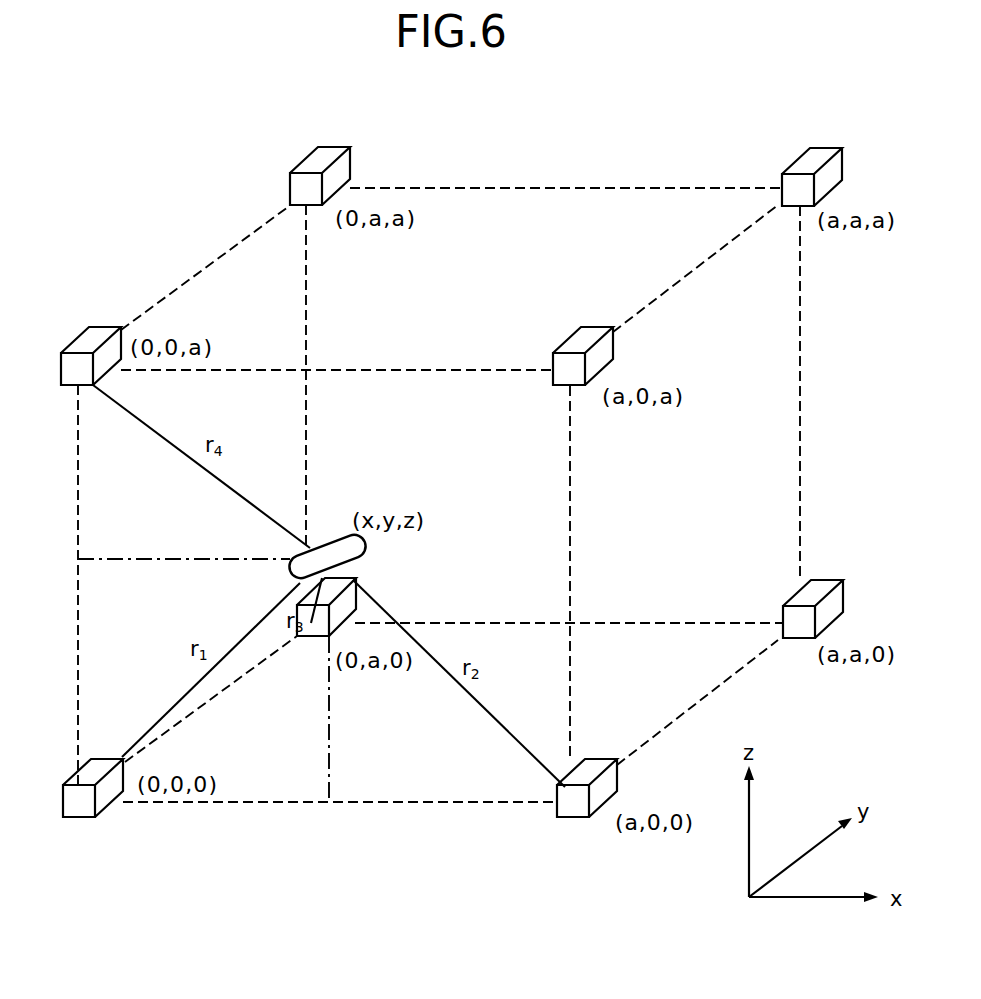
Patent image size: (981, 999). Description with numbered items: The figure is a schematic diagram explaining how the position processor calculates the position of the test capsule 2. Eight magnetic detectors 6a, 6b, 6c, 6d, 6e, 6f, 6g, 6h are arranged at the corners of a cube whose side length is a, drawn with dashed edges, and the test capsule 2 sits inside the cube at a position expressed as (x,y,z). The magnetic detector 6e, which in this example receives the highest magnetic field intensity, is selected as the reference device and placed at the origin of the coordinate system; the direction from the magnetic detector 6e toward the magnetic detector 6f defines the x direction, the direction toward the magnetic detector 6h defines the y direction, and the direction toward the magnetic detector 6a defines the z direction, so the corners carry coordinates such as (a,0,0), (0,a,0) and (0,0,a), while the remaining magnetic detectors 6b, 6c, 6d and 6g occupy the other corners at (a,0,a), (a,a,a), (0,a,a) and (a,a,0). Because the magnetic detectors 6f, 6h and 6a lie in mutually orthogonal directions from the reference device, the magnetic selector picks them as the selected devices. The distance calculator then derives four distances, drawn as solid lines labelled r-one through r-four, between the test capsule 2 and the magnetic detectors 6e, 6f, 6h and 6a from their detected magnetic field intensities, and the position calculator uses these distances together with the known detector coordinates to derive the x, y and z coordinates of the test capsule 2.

The test capsule 2 is at (337, 547).
The magnetic detector 6a is at (89, 331).
The magnetic detector 6b is at (584, 331).
The magnetic detector 6c is at (814, 153).
The magnetic detector 6d is at (322, 152).
The magnetic detector 6e is at (94, 766).
The magnetic detector 6f is at (592, 765).
The magnetic detector 6g is at (816, 588).
The magnetic detector 6h is at (348, 604).